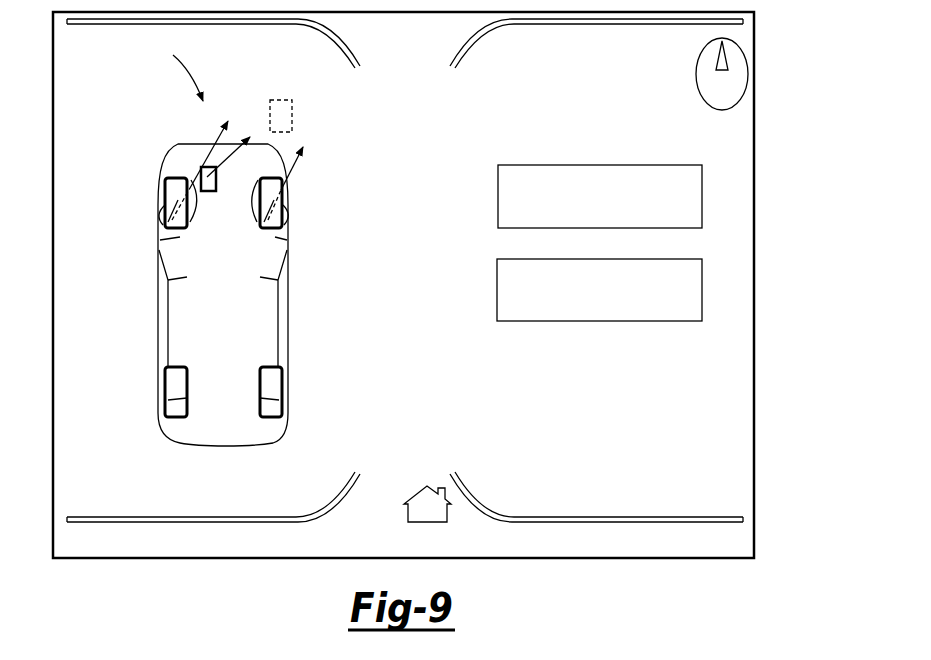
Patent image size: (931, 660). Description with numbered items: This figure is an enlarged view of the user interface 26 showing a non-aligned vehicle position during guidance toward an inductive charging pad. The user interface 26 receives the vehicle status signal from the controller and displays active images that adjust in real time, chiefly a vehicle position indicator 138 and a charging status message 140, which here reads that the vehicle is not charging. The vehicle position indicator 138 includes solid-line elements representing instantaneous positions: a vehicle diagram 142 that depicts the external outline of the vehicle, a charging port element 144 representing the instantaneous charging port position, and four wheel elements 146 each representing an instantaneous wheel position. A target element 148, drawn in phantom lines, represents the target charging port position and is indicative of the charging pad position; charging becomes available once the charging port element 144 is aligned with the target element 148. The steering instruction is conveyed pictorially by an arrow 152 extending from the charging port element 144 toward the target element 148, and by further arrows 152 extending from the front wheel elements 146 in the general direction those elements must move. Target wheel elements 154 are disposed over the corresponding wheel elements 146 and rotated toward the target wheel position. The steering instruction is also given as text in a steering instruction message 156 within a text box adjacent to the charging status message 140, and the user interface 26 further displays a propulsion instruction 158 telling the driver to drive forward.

The user interface 26 is at (755, 135).
The vehicle position indicator 138 is at (173, 66).
The charging status message 140 is at (497, 280).
The vehicle diagram 142 is at (158, 342).
The charging port element 144 is at (200, 167).
The wheel elements 146 is at (165, 192).
The target element 148 is at (292, 116).
The arrow 152 is at (232, 147).
The target wheel elements 154 is at (158, 230).
The steering instruction message 156 is at (702, 197).
The propulsion instruction 158 is at (498, 192).